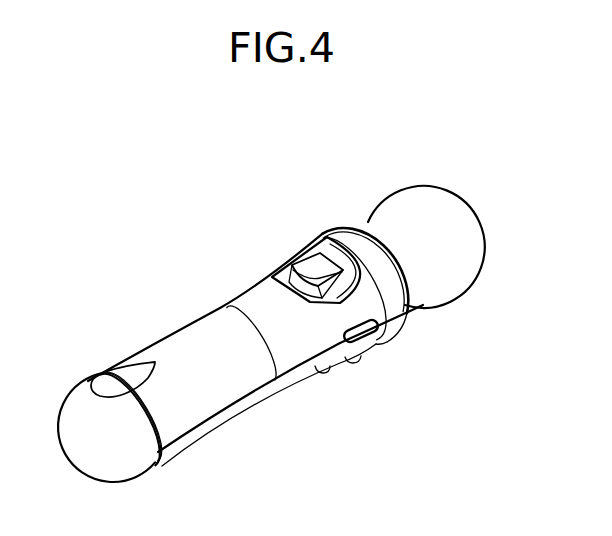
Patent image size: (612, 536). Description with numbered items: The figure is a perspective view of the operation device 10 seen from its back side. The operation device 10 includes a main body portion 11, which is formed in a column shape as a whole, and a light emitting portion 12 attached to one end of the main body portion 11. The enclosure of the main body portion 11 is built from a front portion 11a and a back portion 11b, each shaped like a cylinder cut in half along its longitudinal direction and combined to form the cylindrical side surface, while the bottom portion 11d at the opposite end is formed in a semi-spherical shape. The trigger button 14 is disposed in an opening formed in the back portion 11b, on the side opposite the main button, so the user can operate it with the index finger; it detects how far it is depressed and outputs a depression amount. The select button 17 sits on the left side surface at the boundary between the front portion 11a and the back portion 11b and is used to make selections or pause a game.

The operation device 10 is at (261, 333).
The main body portion 11 is at (255, 341).
The front portion 11a is at (225, 412).
The back portion 11b is at (184, 333).
The bottom portion 11d is at (88, 459).
The light emitting portion 12 is at (443, 189).
The trigger button 14 is at (308, 269).
The select button 17 is at (357, 342).